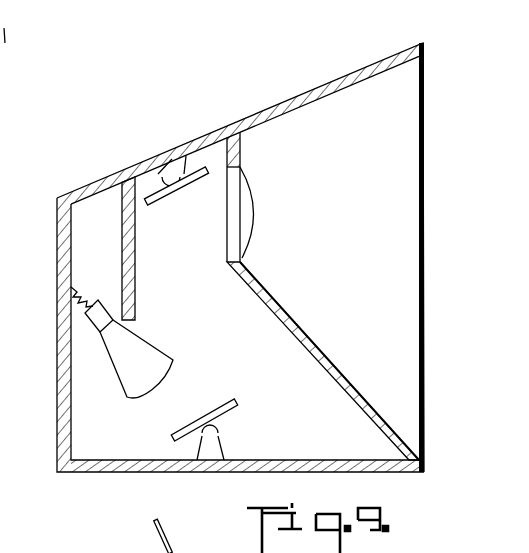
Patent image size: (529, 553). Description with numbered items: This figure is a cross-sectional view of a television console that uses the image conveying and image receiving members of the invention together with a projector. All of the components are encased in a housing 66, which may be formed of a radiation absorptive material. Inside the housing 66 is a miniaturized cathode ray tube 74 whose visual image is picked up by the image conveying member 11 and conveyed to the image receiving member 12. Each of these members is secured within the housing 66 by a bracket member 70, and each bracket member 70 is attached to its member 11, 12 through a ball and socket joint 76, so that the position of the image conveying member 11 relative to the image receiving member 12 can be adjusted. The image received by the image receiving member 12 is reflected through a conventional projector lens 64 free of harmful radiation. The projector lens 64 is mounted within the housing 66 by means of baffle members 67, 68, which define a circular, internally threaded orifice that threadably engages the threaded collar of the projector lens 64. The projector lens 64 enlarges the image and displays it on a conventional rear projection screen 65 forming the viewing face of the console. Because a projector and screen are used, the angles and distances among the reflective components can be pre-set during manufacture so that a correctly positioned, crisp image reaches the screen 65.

The image conveying member 11 is at (237, 400).
The image receiving member 12 is at (147, 204).
The projector lens 64 is at (242, 165).
The rear projection screen 65 is at (421, 68).
The housing 66 is at (58, 371).
The baffle member 67 is at (247, 128).
The baffle member 68 is at (315, 339).
The bracket member 70 is at (187, 153).
The miniaturized cathode ray tube 74 is at (160, 355).
The ball and socket joint 76 is at (193, 181).